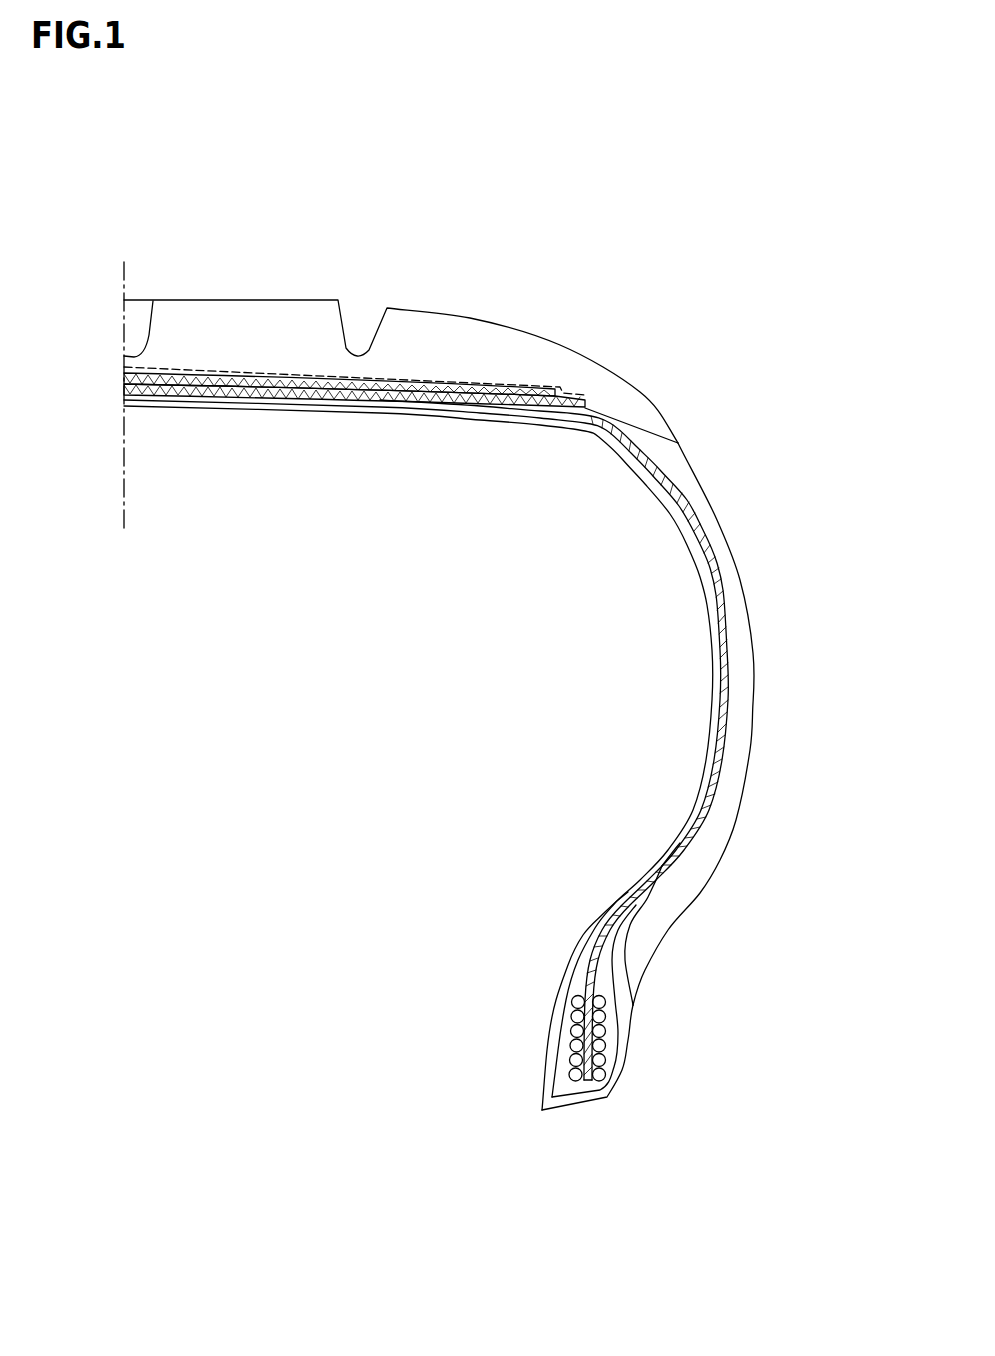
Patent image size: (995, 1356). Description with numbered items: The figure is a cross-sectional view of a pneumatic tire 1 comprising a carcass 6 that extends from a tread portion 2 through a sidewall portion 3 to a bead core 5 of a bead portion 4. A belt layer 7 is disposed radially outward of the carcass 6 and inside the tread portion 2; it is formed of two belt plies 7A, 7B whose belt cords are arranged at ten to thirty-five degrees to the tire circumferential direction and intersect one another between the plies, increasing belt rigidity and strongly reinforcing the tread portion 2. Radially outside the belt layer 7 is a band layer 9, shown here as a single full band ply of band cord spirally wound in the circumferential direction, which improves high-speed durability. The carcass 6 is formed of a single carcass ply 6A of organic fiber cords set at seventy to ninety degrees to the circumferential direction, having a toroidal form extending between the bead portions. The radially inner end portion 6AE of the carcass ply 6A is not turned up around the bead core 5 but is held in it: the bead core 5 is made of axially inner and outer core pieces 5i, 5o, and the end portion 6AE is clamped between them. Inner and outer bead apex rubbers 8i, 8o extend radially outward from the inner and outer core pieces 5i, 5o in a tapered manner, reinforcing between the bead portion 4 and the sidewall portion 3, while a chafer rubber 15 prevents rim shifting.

The pneumatic tire 1 is at (640, 280).
The tread portion 2 is at (455, 337).
The sidewall portion 3 is at (756, 524).
The bead portion 4 is at (542, 1006).
The bead core 5 is at (443, 1080).
The inner core piece 5i is at (567, 1047).
The outer core piece 5o is at (597, 1047).
The carcass 6 is at (725, 638).
The carcass ply 6A is at (461, 751).
The radially inner end portion of the carcass ply 6AE is at (598, 1058).
The belt layer 7 is at (377, 498).
The belt ply 7A is at (331, 388).
The belt ply 7B is at (266, 383).
The inner bead apex rubber 8i is at (592, 972).
The outer bead apex rubber 8o is at (612, 983).
The band layer 9 is at (239, 368).
The chafer rubber 15 is at (635, 972).